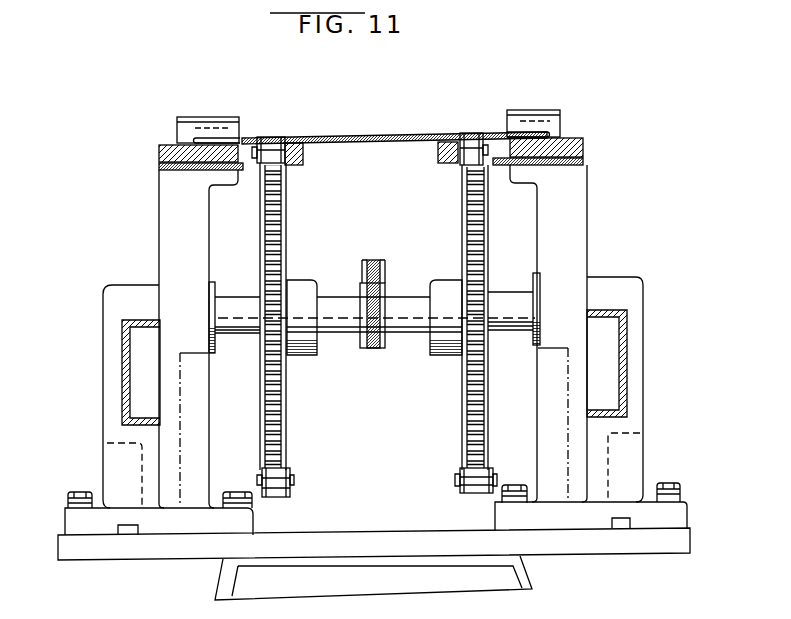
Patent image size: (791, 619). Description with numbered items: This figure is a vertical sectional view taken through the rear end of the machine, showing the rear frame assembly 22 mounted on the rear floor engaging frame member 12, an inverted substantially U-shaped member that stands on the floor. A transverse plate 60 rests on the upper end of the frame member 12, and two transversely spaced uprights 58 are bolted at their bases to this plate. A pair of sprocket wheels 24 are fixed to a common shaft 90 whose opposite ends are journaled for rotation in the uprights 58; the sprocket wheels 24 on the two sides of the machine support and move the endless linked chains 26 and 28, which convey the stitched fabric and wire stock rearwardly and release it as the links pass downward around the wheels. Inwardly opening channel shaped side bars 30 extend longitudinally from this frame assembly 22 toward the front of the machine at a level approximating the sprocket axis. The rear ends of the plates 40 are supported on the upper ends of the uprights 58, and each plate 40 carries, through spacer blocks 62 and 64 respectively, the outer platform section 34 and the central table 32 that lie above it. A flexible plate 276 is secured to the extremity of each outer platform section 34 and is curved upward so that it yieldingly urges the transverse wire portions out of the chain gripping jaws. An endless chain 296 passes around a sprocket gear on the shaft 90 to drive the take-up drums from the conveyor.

The rear floor engaging frame member 12 is at (532, 588).
The frame assembly 22 is at (593, 227).
The sprocket wheels 24 is at (283, 225).
The endless linked chain 26 is at (463, 482).
The endless linked chain 28 is at (287, 485).
The channel shaped side bars 30 is at (122, 357).
The central platform section or table 32 is at (400, 140).
The outer platform sections 34 is at (177, 143).
The plates 40 is at (183, 170).
The uprights or frame members 58 is at (170, 250).
The transverse plate 60 is at (192, 543).
The spacer block 62 is at (168, 160).
The spacer block 64 is at (305, 163).
The shaft 90 is at (352, 332).
The flexible plate 276 is at (177, 125).
The endless chain 296 is at (367, 277).